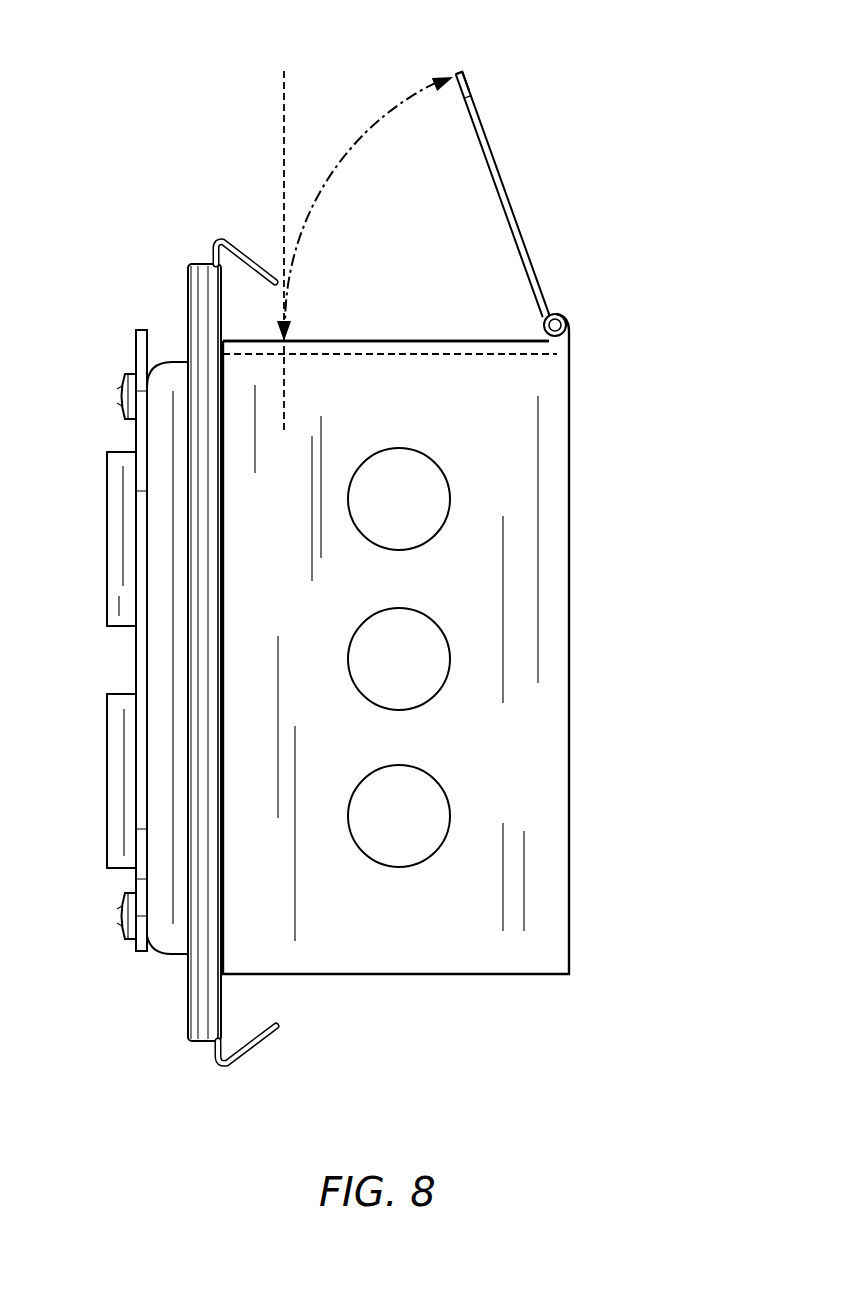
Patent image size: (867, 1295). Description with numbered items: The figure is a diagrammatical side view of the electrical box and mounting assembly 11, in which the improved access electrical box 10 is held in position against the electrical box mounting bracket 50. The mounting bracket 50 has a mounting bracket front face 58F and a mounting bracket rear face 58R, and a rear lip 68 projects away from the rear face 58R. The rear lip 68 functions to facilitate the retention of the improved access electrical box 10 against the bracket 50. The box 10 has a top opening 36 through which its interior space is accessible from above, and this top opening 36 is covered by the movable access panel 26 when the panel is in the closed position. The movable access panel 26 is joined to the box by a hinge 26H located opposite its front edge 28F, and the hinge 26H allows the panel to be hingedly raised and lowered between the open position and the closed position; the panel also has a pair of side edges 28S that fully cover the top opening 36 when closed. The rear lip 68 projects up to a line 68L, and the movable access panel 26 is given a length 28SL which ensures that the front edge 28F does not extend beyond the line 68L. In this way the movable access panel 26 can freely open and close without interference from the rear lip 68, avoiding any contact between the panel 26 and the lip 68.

The improved access electrical box 10 is at (590, 994).
The electrical box and mounting assembly 11 is at (272, 1074).
The movable access panel 26 is at (522, 233).
The hinge 26H is at (558, 314).
The front edge 28F is at (462, 72).
The side edges 28S is at (479, 150).
The length 28SL is at (466, 350).
The top opening 36 is at (384, 340).
The electrical box mounting bracket 50 is at (150, 1068).
The mounting bracket front face 58F is at (186, 290).
The mounting bracket rear face 58R is at (221, 316).
The rear lip 68 is at (255, 258).
The line 68L is at (283, 138).